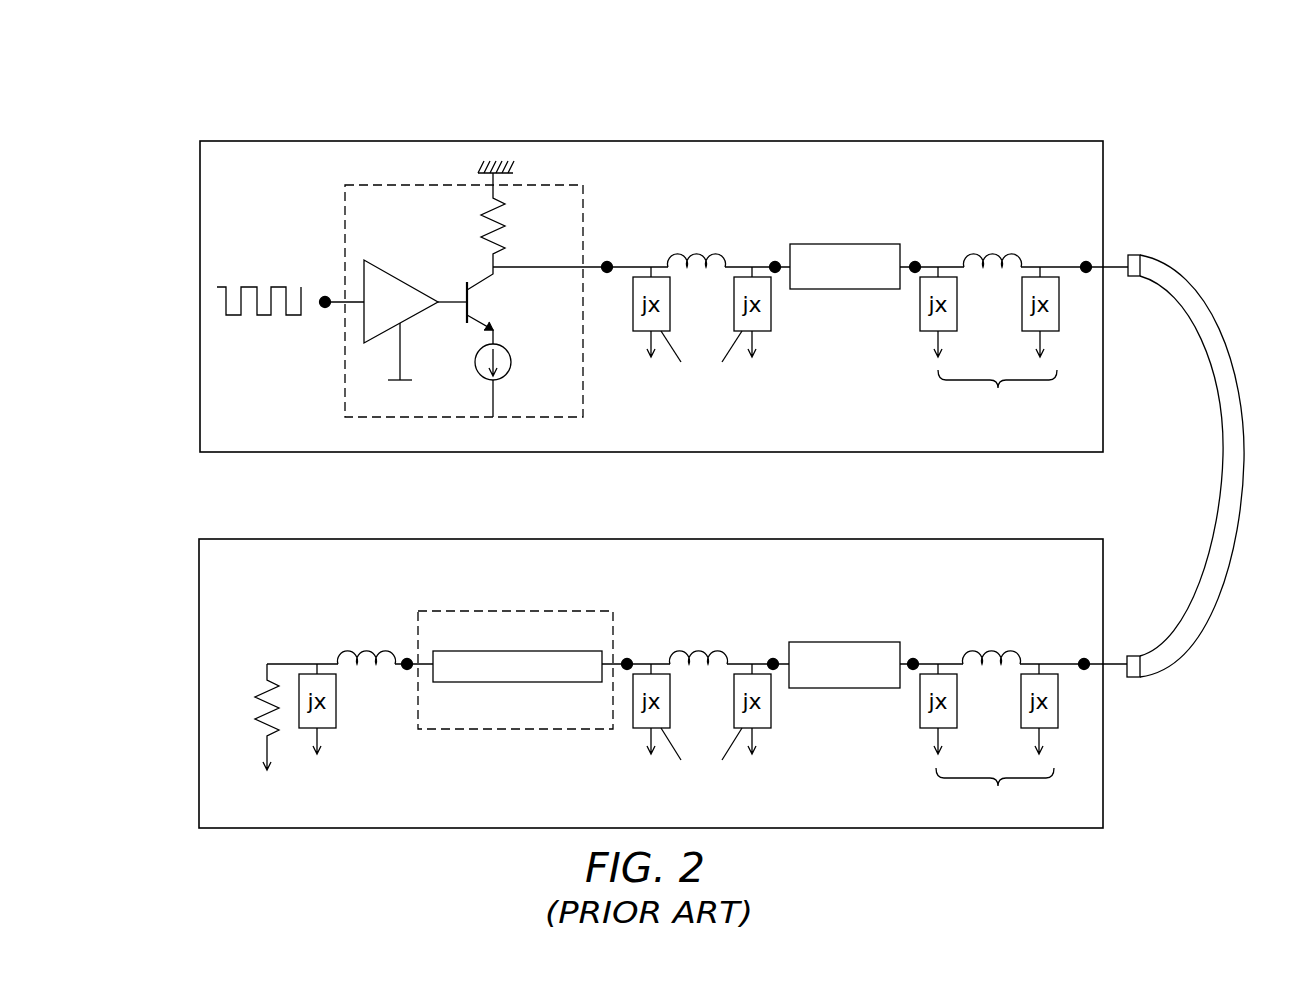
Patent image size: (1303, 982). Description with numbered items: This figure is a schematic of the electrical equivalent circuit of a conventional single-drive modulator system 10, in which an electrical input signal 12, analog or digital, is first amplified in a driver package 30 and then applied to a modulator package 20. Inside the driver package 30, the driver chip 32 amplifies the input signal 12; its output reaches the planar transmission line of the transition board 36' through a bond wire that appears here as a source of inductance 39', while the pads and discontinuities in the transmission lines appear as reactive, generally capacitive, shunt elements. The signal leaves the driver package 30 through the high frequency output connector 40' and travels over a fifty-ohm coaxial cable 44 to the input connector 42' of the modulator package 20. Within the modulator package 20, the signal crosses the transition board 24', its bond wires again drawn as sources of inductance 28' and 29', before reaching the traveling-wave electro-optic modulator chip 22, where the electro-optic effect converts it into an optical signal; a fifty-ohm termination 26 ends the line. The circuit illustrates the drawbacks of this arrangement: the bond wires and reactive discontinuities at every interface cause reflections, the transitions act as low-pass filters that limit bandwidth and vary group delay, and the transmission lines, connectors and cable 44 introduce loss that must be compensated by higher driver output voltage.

The optical transmitter system 10 is at (808, 125).
The electrical input signal 12 is at (276, 286).
The modulator package 20 is at (199, 616).
The modulator chip 22 is at (495, 611).
The transition board 24' is at (844, 693).
The 50 ohm termination resistor 26 is at (266, 680).
The source of inductance 28' is at (686, 628).
The source of inductance 29' is at (347, 636).
The driver package 30 is at (200, 258).
The driver chip 32 is at (345, 222).
The transition board 36' is at (845, 294).
The source of inductance 39' is at (684, 238).
The high frequency output connector 40' is at (989, 336).
The input connector 42' is at (989, 732).
The coaxial cable 44 is at (1232, 368).